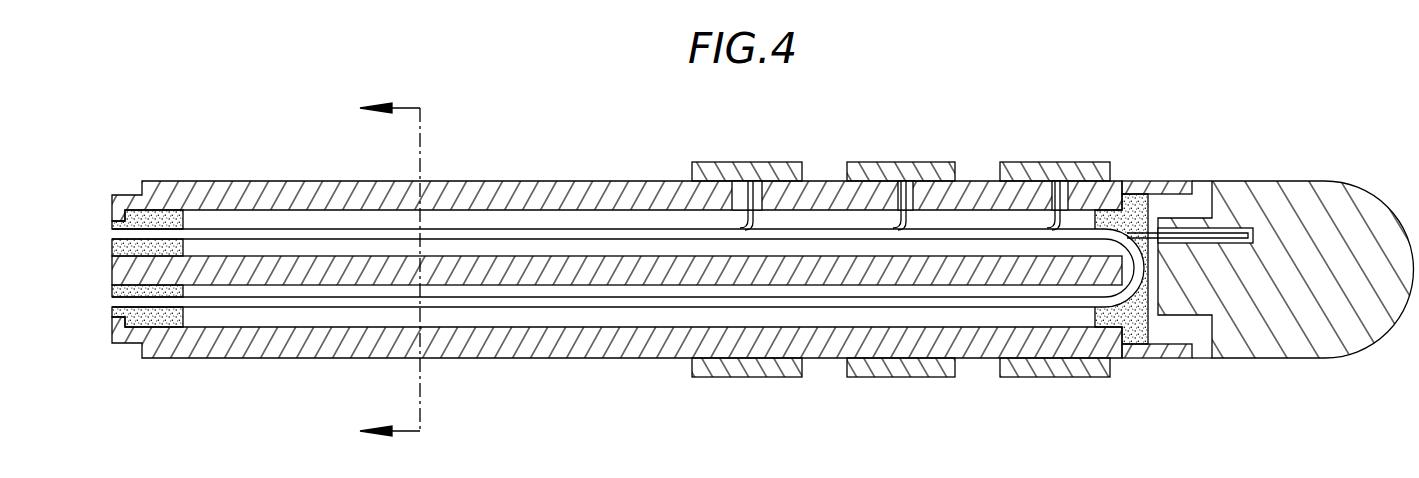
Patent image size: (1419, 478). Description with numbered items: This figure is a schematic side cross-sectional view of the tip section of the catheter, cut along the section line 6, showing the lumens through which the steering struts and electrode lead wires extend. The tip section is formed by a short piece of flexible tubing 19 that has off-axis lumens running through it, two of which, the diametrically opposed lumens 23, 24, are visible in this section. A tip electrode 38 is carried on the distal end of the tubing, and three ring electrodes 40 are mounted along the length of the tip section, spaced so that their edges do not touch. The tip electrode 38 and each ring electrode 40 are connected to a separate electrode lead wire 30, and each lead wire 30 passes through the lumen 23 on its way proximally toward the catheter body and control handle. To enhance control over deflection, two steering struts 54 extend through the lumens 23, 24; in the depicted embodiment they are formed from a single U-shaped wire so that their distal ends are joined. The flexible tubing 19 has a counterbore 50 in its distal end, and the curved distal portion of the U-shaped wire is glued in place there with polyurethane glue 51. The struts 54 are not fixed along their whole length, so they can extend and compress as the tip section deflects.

The section line 6- 6 is at (377, 272).
The flexible tubing 19 is at (628, 338).
The lumen 23 is at (237, 210).
The lumen 24 is at (265, 318).
The electrode lead wire 30 is at (740, 198).
The tip electrode 38 is at (1310, 228).
The ring electrode 40 is at (740, 378).
The counterbore 50 is at (1201, 342).
The polyurethane glue 51 is at (155, 210).
The steering strut 54 is at (473, 229).